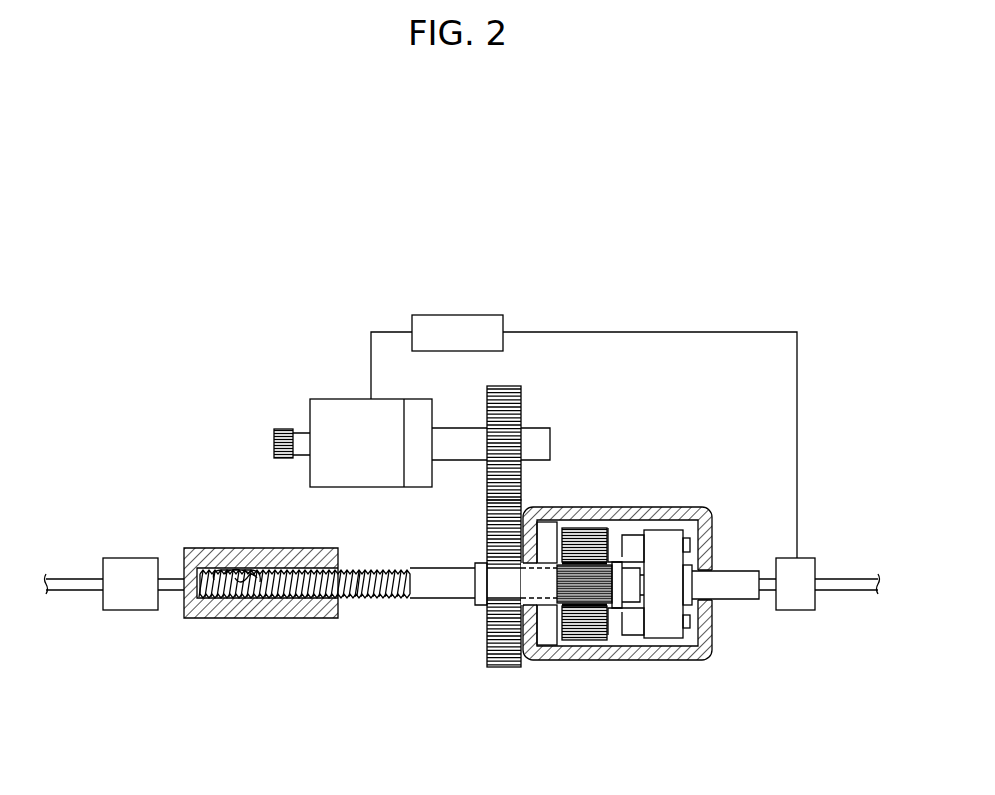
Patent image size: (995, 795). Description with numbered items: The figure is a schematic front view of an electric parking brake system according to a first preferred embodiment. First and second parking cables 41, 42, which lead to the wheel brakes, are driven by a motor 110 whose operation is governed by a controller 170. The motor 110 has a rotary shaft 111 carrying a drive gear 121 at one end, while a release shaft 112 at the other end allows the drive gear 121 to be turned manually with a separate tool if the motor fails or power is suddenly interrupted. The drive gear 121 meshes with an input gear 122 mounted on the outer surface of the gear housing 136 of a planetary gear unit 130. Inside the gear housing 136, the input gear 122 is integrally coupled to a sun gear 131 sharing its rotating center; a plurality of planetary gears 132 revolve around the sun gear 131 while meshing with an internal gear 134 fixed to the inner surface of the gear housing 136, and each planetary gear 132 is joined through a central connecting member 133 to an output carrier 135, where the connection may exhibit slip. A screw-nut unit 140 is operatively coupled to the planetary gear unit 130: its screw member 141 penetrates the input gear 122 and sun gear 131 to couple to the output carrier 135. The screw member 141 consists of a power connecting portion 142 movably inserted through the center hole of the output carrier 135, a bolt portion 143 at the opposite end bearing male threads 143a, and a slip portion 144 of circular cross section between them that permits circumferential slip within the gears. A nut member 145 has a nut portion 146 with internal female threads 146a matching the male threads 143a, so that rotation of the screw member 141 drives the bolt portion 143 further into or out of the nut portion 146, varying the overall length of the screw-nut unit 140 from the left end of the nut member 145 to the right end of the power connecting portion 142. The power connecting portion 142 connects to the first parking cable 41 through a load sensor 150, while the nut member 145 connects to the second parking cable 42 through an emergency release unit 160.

The first parking cable 41 is at (859, 581).
The second parking cable 42 is at (74, 580).
The motor 110 is at (334, 399).
The rotary shaft 111 is at (549, 444).
The release shaft 112 is at (296, 434).
The drive gear 121 is at (506, 386).
The input gear 122 is at (490, 653).
The planetary gear unit 130 is at (617, 551).
The sun gear 131 is at (605, 608).
The planetary gears 132 is at (582, 528).
The connecting member 133 is at (646, 532).
The internal gear 134 is at (548, 658).
The output carrier 135 is at (668, 636).
The gear housing 136 is at (681, 507).
The screw-nut unit 140 is at (396, 695).
The screw member 141 is at (407, 605).
The power connecting portion 142 is at (733, 573).
The bolt portion 143 is at (387, 565).
The male threads 143a is at (366, 571).
The slip portion 144 is at (449, 570).
The nut member 145 is at (330, 622).
The nut portion 146 is at (235, 578).
The female threads 146a is at (252, 578).
The load sensor 150 is at (806, 559).
The emergency release unit 160 is at (128, 558).
The controller 170 is at (468, 318).